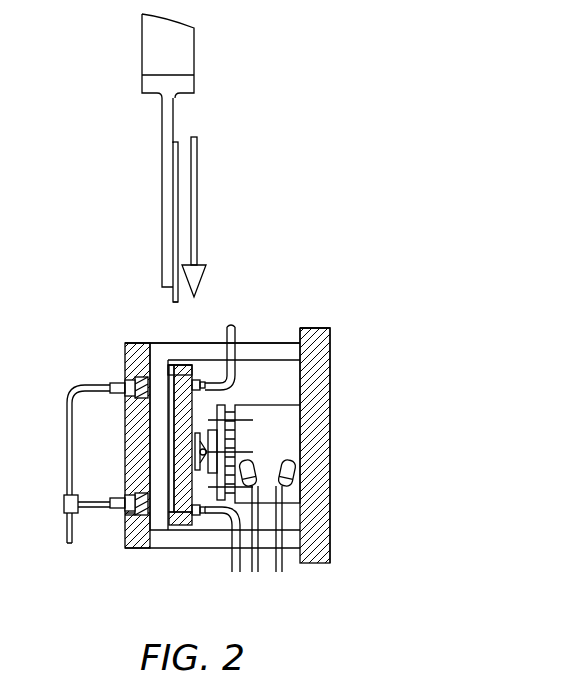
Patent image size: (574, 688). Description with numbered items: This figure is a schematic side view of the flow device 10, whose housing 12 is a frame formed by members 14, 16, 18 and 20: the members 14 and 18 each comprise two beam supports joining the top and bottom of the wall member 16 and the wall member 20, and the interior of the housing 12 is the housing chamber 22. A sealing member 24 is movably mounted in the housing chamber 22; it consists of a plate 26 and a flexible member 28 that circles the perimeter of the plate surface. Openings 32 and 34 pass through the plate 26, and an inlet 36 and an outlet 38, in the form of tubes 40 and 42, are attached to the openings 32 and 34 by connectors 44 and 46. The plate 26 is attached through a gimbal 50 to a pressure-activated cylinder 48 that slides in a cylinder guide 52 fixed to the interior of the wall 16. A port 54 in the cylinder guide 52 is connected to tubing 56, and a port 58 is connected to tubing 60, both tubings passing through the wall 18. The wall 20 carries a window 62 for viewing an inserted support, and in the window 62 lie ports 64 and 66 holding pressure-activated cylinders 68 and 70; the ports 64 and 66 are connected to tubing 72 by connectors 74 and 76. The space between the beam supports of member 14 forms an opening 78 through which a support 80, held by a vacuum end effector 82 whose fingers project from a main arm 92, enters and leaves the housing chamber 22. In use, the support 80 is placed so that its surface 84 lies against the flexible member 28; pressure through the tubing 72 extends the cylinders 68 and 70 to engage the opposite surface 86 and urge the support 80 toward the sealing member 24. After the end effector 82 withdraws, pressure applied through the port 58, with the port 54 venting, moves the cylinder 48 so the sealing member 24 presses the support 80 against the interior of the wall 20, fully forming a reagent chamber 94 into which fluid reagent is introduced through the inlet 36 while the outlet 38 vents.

The flow device 10 is at (378, 283).
The housing 12 is at (368, 350).
The member 14 is at (290, 345).
The wall member 16 is at (328, 498).
The member 18 is at (140, 540).
The wall member 20 is at (122, 360).
The housing chamber 22 is at (318, 373).
The sealing member 24 is at (150, 343).
The plate 26 is at (160, 390).
The flexible member 28 is at (172, 520).
The opening 32 is at (238, 355).
The opening 34 is at (182, 527).
The inlet 36 is at (240, 572).
The outlet 38 is at (240, 327).
The tube 40 is at (217, 480).
The tube 42 is at (245, 378).
The connector 44 is at (275, 410).
The connector 46 is at (205, 516).
The pressure-activated cylinder 48 is at (227, 422).
The gimbal 50 is at (236, 428).
The cylinder guide 52 is at (325, 328).
The port 54 is at (230, 452).
The tubing 56 is at (282, 572).
The port 58 is at (288, 462).
The tubing 60 is at (284, 572).
The window 62 is at (115, 445).
The port 64 is at (122, 520).
The port 66 is at (124, 398).
The pressure-activated cylinder 68 is at (122, 514).
The pressure-activated cylinder 70 is at (116, 380).
The tubing 72 is at (67, 452).
The connector 74 is at (120, 498).
The connector 76 is at (108, 384).
The opening 78 is at (166, 343).
The support 80 is at (176, 303).
The vacuum end effector 82 is at (162, 118).
The surface 84 is at (180, 224).
The surface 86 is at (175, 146).
The main arm 92 is at (195, 40).
The reagent chamber 94 is at (130, 548).